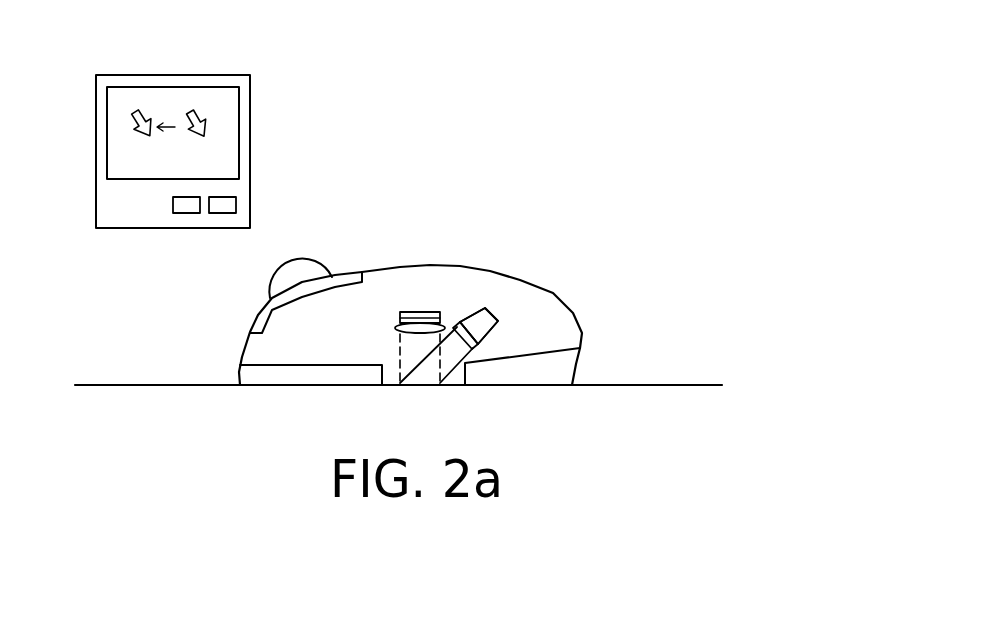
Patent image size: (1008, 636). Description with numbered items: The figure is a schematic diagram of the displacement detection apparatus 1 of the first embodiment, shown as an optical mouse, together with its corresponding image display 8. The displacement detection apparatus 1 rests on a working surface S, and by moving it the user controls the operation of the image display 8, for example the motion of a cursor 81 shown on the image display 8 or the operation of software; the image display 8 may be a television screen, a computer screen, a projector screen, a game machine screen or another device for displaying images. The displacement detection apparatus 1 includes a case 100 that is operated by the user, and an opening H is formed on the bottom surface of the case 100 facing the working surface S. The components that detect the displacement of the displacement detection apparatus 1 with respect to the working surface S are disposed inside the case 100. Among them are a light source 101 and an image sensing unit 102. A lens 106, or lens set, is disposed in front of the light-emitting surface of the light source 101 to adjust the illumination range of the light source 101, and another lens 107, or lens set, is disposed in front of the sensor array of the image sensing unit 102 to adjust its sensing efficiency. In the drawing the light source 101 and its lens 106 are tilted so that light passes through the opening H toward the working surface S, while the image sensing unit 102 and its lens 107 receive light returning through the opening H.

The displacement detection apparatus 1 is at (618, 152).
The image display 8 is at (189, 151).
The cursor 81 is at (137, 138).
The case 100 is at (415, 263).
The light source 101 is at (492, 326).
The image sensing unit 102 is at (403, 311).
The lens 106 is at (484, 307).
The lens 107 is at (462, 318).
The working surface S is at (667, 385).
The opening H is at (398, 377).